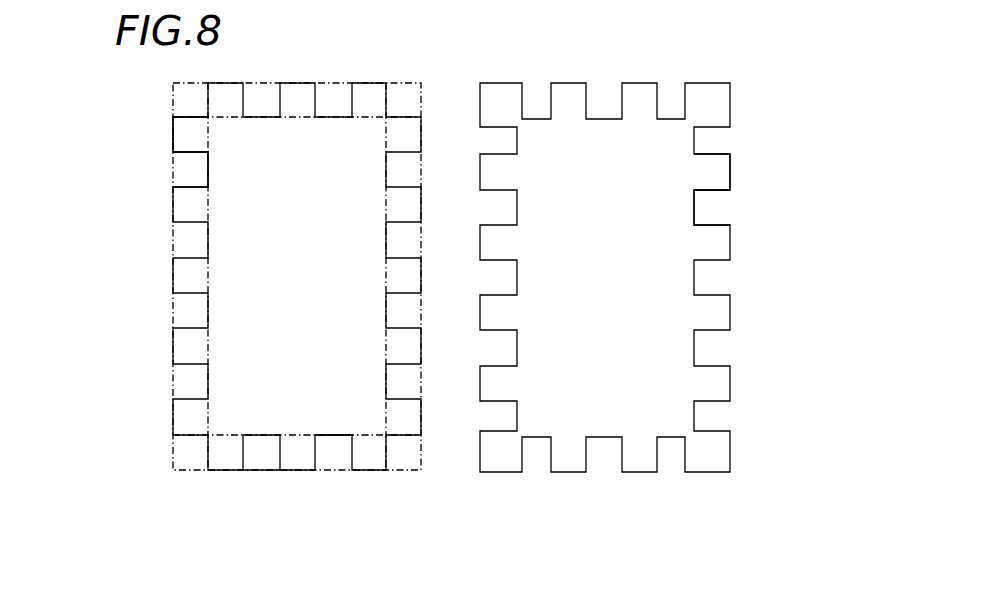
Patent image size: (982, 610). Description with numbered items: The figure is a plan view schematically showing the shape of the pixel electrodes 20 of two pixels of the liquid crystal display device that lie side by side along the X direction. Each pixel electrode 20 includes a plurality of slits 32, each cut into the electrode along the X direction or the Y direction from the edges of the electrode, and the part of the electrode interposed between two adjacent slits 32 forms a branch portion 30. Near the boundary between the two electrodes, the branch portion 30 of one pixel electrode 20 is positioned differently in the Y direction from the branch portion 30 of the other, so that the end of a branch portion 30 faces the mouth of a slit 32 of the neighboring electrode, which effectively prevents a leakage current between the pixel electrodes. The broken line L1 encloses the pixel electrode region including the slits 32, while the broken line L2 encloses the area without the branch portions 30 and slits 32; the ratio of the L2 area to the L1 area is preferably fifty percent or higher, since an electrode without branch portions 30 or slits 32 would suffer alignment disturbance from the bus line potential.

The pixel electrode 20 is at (298, 83).
The branch portion 30 is at (183, 133).
The slit 32 is at (183, 172).
The broken line L1 is at (260, 470).
The broken line L2 is at (330, 438).